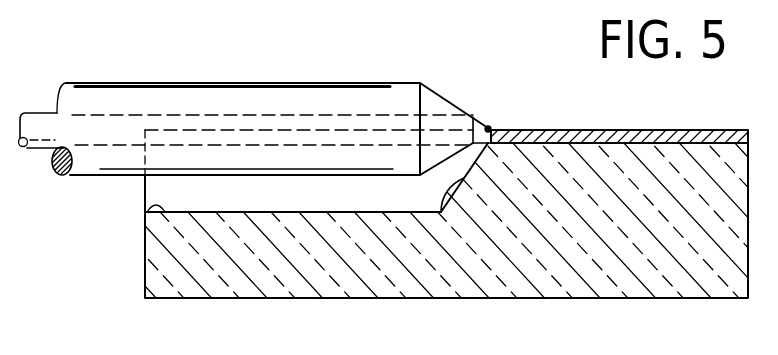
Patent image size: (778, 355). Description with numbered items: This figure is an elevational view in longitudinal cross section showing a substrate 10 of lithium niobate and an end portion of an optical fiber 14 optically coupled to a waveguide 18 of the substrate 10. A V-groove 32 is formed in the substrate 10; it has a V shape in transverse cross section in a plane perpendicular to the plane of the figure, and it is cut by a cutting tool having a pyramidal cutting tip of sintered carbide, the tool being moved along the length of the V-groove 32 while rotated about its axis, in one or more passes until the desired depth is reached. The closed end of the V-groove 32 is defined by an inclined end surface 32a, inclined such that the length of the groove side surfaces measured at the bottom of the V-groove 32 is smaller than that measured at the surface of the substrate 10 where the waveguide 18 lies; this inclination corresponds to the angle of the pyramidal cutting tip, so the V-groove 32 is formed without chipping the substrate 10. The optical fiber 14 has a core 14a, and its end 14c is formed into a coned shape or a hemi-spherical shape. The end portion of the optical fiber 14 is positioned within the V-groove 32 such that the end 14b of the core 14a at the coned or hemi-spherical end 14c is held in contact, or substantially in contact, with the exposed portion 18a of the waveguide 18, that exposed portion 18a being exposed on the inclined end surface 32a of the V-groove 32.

The substrate 10 is at (587, 294).
The optical fiber 14 is at (185, 82).
The core 14a is at (40, 120).
The end of the core 14b is at (479, 117).
The end of the optical fiber 14c is at (460, 96).
The waveguide 18 is at (649, 132).
The exposed portion of the waveguide 18a is at (488, 126).
The V-groove 32 is at (143, 213).
The inclined end surface 32a is at (441, 212).